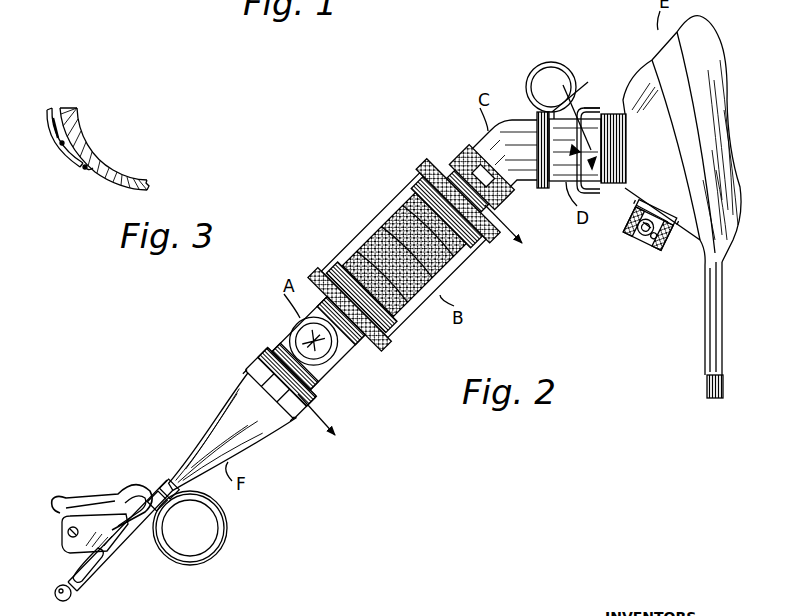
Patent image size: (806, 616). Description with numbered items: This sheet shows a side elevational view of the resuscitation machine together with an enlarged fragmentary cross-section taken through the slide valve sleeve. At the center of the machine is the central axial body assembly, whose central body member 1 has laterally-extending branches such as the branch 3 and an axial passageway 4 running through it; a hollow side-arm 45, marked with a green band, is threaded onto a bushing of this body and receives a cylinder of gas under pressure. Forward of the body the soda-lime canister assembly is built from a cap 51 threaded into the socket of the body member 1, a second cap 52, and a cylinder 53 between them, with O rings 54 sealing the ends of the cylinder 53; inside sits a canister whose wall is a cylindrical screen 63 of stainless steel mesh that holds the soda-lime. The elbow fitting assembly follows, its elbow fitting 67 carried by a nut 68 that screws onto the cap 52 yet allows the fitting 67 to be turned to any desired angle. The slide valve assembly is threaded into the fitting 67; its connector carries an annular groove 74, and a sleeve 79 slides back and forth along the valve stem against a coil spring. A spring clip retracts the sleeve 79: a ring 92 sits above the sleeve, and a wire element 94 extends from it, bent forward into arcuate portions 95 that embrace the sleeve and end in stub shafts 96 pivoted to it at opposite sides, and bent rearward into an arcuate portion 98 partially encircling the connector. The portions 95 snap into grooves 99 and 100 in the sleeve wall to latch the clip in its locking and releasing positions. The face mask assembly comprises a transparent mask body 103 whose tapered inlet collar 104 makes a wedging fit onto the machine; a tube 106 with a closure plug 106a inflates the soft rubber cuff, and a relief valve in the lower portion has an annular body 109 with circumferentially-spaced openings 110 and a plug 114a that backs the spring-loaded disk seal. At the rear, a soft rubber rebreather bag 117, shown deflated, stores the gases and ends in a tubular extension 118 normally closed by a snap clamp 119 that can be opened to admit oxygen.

In FIG. 2, the central body member 1 is at (279, 385).
In FIG. 2, the laterally-extending branch 3 is at (574, 134).
In FIG. 2, the axial passageway 4 is at (416, 330).
In FIG. 2, the side-arm 45 is at (317, 342).
In FIG. 2, the cap 51 is at (468, 191).
In FIG. 2, the cap 52 is at (404, 254).
In FIG. 2, the cylinder 53 is at (405, 255).
In FIG. 2, the O rings 54 is at (404, 255).
In FIG. 2, the cylindrical screen 63 is at (403, 255).
In FIG. 2, the elbow fitting 67 is at (496, 126).
In FIG. 2, the nut 68 is at (481, 177).
In FIG. 2, the annular groove 74 is at (565, 174).
In FIG. 3, the sleeve 79 is at (100, 185).
In FIG. 2, the ring 92 is at (561, 66).
In FIG. 2, the wire element 94 is at (580, 87).
In FIG. 3, the arcuate portions 95 is at (52, 138).
In FIG. 2, the arcuate portions 95 is at (595, 110).
In FIG. 3, the stub shafts 96 is at (86, 168).
In FIG. 2, the arcuate portion 98 is at (540, 128).
In FIG. 3, the groove 99 is at (84, 169).
In FIG. 2, the groove 99 is at (593, 190).
In FIG. 2, the groove 100 is at (604, 134).
In FIG. 2, the mask body 103 is at (648, 80).
In FIG. 2, the inlet collar 104 is at (624, 98).
In FIG. 2, the tube 106 is at (707, 300).
In FIG. 2, the closure plug 106a is at (708, 390).
In FIG. 2, the annular body 109 is at (670, 238).
In FIG. 2, the openings 110 is at (630, 236).
In FIG. 2, the plug 114a is at (650, 246).
In FIG. 2, the rebreather bag 117 is at (214, 452).
In FIG. 2, the tubular extension 118 is at (122, 502).
In FIG. 2, the snap clamp 119 is at (98, 508).